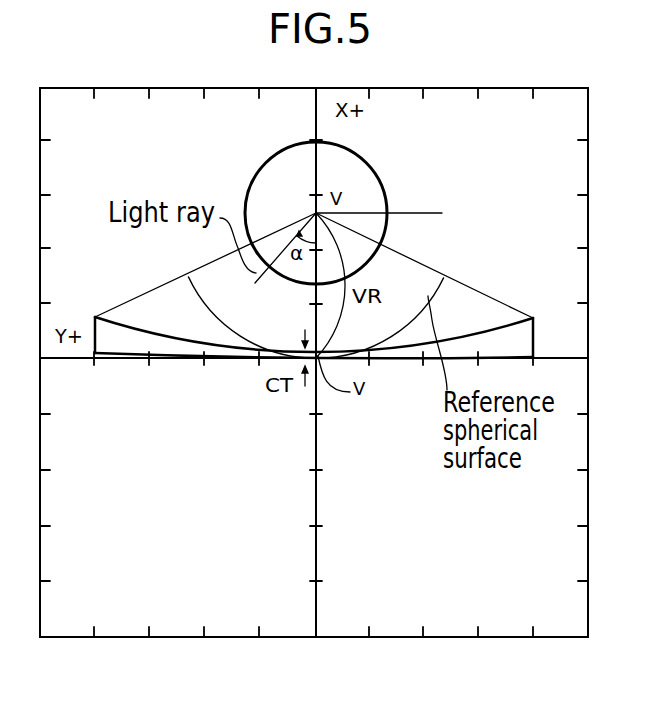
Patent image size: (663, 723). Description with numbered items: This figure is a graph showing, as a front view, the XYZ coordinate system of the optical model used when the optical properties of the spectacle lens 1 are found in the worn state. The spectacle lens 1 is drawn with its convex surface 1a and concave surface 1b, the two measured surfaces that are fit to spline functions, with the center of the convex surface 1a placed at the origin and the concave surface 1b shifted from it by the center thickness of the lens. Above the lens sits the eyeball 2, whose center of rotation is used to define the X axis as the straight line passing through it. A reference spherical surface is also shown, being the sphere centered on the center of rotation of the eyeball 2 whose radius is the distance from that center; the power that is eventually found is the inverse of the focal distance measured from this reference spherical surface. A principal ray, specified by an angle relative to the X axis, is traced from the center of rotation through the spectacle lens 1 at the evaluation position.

The spectacle lens 1 is at (298, 291).
The convex surface 1a is at (170, 350).
The concave surface 1b is at (118, 322).
The eyeball 2 is at (383, 176).